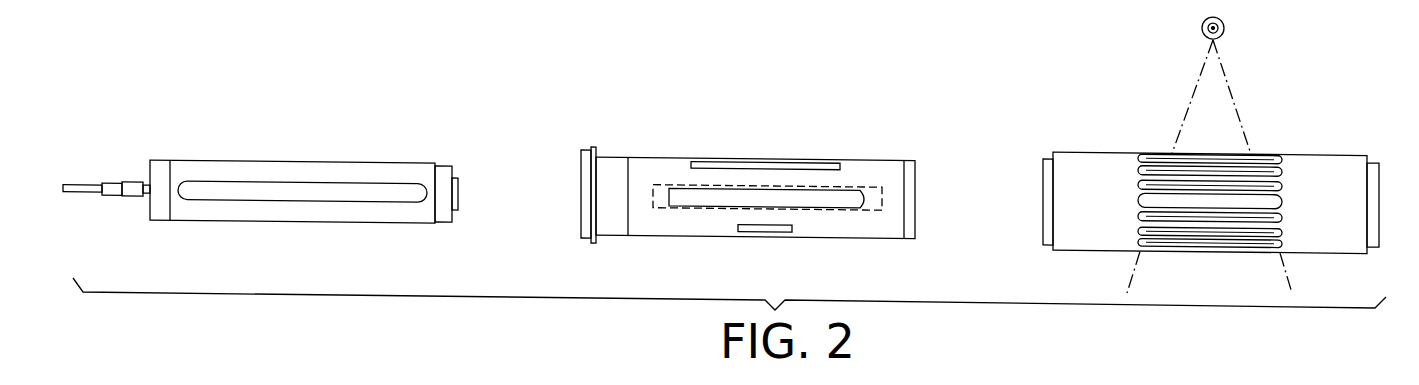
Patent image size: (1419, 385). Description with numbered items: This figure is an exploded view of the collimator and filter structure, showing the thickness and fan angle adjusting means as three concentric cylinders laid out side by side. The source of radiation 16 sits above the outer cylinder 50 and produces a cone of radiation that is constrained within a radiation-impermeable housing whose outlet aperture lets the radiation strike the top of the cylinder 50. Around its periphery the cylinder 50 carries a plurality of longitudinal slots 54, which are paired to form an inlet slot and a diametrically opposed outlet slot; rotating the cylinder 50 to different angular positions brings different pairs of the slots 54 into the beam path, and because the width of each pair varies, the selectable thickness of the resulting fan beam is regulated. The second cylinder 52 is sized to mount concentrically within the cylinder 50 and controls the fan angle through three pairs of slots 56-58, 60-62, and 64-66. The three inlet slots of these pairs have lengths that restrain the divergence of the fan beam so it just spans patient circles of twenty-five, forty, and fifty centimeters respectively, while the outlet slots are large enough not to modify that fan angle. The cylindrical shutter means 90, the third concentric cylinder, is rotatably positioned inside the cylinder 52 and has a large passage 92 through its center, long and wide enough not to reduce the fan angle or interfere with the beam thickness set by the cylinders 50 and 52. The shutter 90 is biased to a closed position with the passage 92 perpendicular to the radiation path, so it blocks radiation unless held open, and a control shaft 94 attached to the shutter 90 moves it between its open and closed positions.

The source of radiation 16 is at (1224, 15).
The cylinder 50 is at (1336, 165).
The second cylinder 52 is at (873, 150).
The longitudinal slots 54 is at (1283, 174).
The pair of slots 56-58 is at (763, 222).
The pair of slots 60-62 is at (716, 154).
The pair of slots 64-66 is at (740, 189).
The cylindrical shutter means 90 is at (360, 159).
The passage 92 is at (370, 191).
The control shaft 94 is at (110, 195).